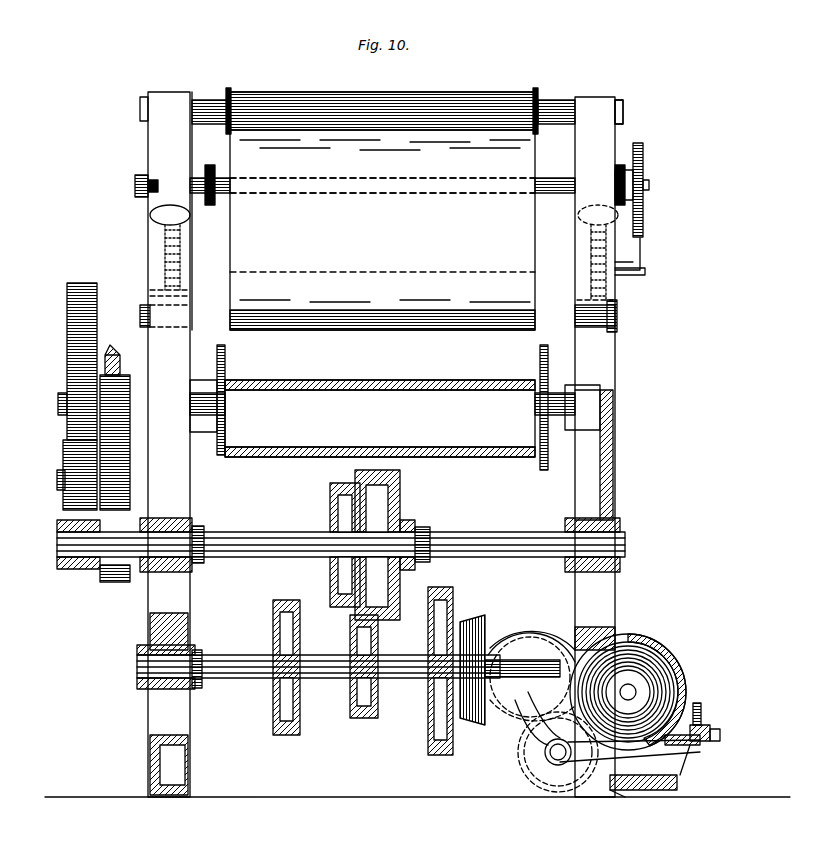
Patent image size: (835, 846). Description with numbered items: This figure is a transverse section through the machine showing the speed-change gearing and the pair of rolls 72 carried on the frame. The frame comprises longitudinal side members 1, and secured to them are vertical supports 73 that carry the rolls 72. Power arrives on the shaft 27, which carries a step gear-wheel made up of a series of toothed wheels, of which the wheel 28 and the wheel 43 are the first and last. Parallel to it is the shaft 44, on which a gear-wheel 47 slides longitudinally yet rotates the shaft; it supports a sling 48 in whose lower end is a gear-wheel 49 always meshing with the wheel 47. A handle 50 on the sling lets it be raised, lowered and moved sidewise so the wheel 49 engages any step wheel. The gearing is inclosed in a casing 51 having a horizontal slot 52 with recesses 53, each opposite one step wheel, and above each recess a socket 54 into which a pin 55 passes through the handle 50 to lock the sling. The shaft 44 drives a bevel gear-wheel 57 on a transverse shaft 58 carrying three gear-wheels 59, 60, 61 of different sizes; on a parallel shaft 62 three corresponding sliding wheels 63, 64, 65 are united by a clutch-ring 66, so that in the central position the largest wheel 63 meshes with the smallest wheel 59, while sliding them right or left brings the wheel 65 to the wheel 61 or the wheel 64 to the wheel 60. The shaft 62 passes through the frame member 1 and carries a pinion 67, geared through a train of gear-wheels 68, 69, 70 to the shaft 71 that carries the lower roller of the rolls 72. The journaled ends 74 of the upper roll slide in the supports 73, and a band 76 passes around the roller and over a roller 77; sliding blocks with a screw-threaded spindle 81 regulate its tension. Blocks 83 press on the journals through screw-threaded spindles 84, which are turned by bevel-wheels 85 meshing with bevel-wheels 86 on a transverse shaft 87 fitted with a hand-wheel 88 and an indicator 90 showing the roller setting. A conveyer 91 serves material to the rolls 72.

The longitudinal side member 1 is at (612, 487).
The shaft 27 is at (630, 688).
The toothed wheel 28 is at (624, 650).
The toothed wheel 43 is at (675, 690).
The shaft 44 is at (548, 660).
The gear-wheel 47 is at (530, 620).
The sling 48 is at (520, 748).
The gear-wheel 49 is at (540, 765).
The handle 50 is at (697, 703).
The casing 51 is at (650, 682).
The slot 52 is at (677, 777).
The recess 53 is at (700, 745).
The orifice or socket 54 is at (705, 727).
The pin 55 is at (720, 733).
The bevel gear-wheel 57 is at (478, 625).
The transverse shaft 58 is at (400, 680).
The gear-wheel 59 is at (362, 718).
The gear-wheel 60 is at (288, 735).
The gear-wheel 61 is at (437, 752).
The shaft 62 is at (455, 535).
The gear-wheel 63 is at (385, 505).
The gear-wheel 64 is at (330, 497).
The gear-wheel 65 is at (410, 520).
The clutch-ring 66 is at (425, 525).
The pinion 67 is at (110, 568).
The gear-wheel 68 is at (65, 470).
The gear-wheel 69 is at (75, 460).
The gear-wheel 70 is at (68, 320).
The shaft 71 is at (58, 400).
The rolls 72 is at (395, 279).
The vertical support 73 is at (165, 133).
The journaled end 74 is at (150, 320).
The band 76 is at (382, 230).
The roller 77 is at (620, 115).
The screw-threaded spindle 81 is at (640, 258).
The block 83 is at (165, 290).
The screw-threaded spindle 84 is at (168, 240).
The bevel-wheel 85 is at (150, 214).
The bevel-wheel 86 is at (190, 200).
The transverse shaft 87 is at (443, 180).
The hand-wheel 88 is at (645, 162).
The indicator 90 is at (627, 270).
The conveyer 91 is at (470, 445).